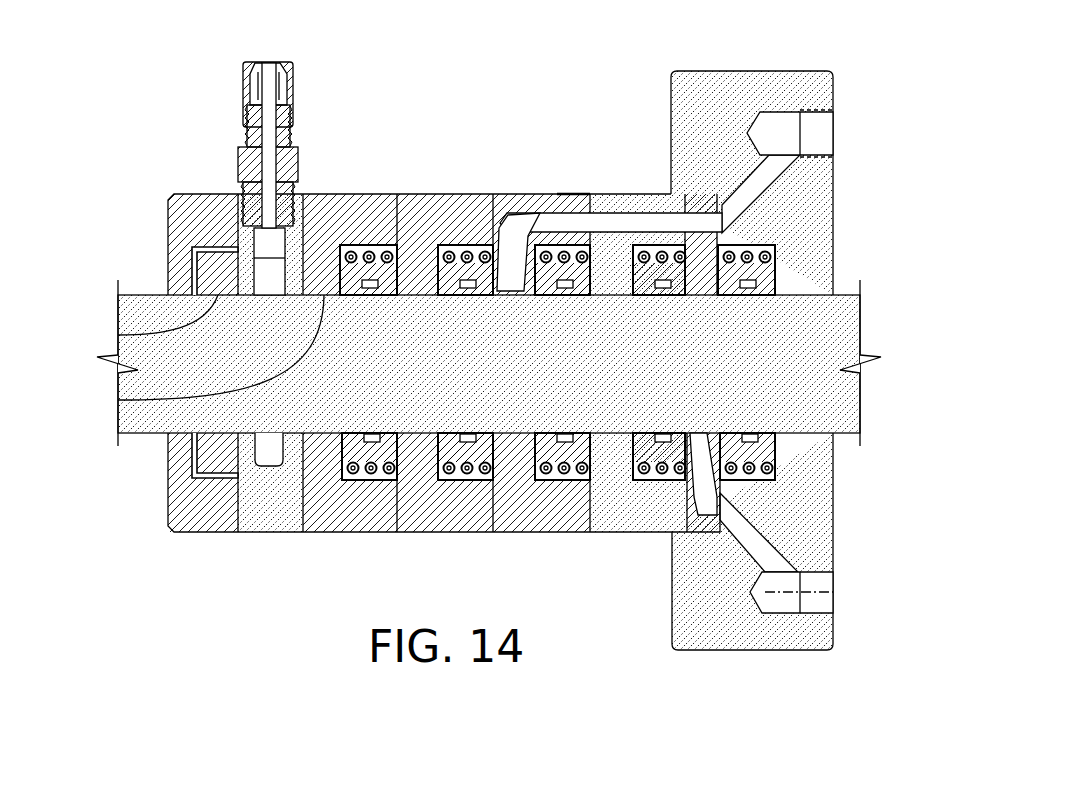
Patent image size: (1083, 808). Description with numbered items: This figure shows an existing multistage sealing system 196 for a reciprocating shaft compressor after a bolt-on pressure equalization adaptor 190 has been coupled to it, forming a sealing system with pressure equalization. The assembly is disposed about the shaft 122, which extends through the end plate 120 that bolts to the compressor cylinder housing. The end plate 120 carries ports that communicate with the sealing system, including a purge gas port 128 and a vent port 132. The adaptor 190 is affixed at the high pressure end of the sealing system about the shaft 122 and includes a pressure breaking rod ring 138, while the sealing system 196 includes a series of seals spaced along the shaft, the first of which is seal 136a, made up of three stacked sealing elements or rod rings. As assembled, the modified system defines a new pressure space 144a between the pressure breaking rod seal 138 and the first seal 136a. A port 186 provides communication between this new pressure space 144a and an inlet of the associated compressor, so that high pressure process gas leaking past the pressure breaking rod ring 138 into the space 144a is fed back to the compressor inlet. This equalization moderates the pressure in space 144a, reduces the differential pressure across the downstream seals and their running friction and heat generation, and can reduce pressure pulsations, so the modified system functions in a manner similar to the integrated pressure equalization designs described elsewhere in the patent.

The end plate 120 is at (766, 0).
The shaft 122 is at (847, 293).
The purge gas port 128 is at (835, 130).
The vent port 132 is at (838, 593).
The first seal 136a is at (363, 246).
The pressure breaking rod ring 138 is at (118, 336).
The intermediate pressure space 144a is at (118, 400).
The port 186 is at (268, 62).
The pressure equalization adaptor 190 is at (267, 546).
The multistage sealing system 196 is at (441, 166).